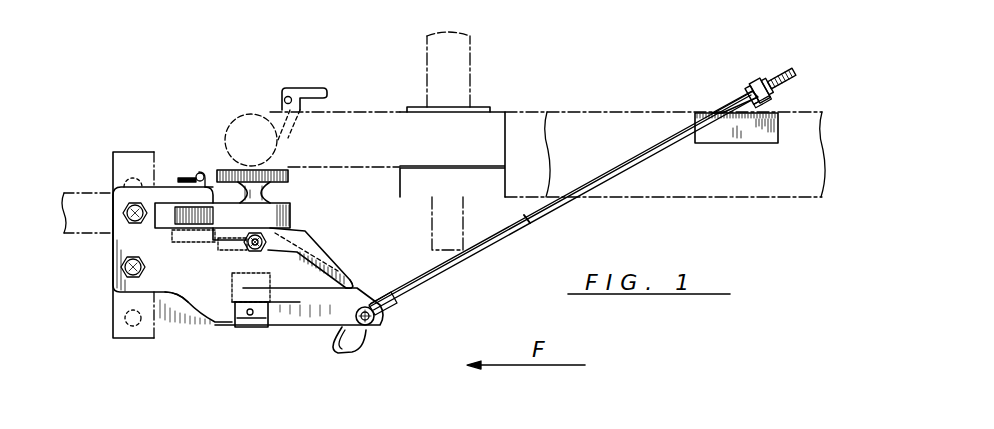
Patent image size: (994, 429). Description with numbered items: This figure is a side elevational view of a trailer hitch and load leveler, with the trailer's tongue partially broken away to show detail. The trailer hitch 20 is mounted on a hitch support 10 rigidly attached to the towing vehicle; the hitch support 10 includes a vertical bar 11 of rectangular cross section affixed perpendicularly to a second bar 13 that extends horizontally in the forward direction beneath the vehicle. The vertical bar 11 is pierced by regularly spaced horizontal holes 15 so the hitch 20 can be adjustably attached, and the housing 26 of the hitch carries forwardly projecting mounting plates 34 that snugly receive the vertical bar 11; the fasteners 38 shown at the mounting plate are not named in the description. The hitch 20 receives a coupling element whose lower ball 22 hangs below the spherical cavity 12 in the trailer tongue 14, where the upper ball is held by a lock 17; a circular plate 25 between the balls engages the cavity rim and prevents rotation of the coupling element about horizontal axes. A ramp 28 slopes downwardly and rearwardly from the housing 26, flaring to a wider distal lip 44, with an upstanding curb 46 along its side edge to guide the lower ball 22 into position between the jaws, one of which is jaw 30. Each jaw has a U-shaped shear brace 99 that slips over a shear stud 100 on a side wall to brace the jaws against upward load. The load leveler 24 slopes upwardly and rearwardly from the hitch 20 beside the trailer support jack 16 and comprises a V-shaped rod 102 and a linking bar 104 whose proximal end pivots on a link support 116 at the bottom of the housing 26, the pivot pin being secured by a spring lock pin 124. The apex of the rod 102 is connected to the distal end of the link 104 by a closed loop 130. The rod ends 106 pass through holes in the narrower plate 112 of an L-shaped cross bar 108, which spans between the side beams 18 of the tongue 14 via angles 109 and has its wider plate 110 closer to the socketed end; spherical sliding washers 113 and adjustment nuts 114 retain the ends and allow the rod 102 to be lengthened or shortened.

The hitch support 10 is at (74, 316).
The vertical bar 11 is at (137, 150).
The spherical cavity 12 is at (250, 130).
The second bar 13 is at (111, 184).
The trailer tongue 14 is at (557, 78).
The horizontal holes 15 is at (126, 322).
The trailer support jack 16 is at (470, 64).
The lock 17 is at (317, 62).
The side beams 18 is at (610, 112).
The trailer hitch 20 is at (349, 241).
The lower ball 22 is at (265, 192).
The load leveler 24 is at (404, 328).
The circular plate 25 is at (212, 178).
The housing 26 is at (173, 297).
The ramp 28 is at (335, 267).
The first jaw 30 is at (290, 214).
The mounting plate 34 is at (117, 281).
The mounting bolts 38 is at (128, 258).
The distal lip 44 is at (350, 288).
The upstanding curb 46 is at (313, 235).
The shear brace 99 is at (254, 252).
The shear stud 100 is at (246, 245).
The V-shaped rod 102 is at (569, 208).
The linking bar 104 is at (335, 340).
The rod ends 106 is at (787, 75).
The cross bar 108 is at (753, 95).
The angle 109 is at (718, 147).
The wider plate 110 is at (737, 98).
The narrower plate 112 is at (770, 107).
The spherical sliding washer 113 is at (757, 83).
The adjustment nut 114 is at (763, 83).
The link support 116 is at (200, 312).
The spring lock pin 124 is at (257, 327).
The closed loop 130 is at (390, 308).